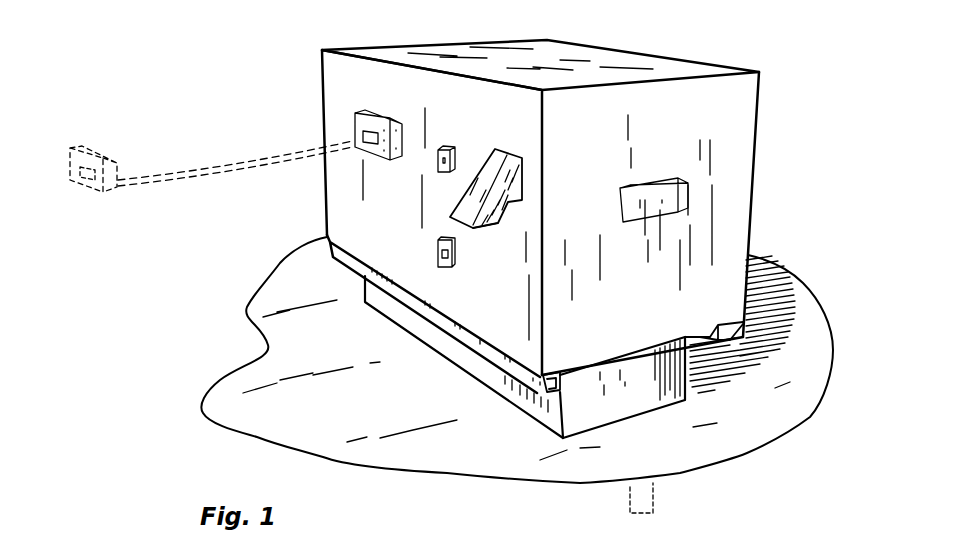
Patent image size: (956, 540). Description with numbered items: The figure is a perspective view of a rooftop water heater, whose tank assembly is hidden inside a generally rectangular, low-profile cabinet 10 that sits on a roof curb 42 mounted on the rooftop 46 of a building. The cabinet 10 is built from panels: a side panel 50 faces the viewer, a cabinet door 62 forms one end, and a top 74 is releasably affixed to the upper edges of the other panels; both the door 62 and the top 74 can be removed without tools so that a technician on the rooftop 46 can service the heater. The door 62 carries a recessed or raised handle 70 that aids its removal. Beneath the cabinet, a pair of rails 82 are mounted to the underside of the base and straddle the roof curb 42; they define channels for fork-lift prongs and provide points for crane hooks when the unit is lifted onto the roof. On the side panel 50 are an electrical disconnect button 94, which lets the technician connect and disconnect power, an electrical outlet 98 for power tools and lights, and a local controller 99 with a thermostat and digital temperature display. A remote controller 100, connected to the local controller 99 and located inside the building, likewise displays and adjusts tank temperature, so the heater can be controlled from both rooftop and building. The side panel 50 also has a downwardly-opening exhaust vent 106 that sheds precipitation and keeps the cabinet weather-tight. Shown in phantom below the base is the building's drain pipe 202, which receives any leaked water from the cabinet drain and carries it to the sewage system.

The cabinet 10 is at (258, 72).
The roof curb 42 is at (653, 390).
The rooftop 46 is at (470, 453).
The side panel 50 is at (413, 277).
The cabinet door 62 is at (735, 135).
The handle 70 is at (655, 208).
The top 74 is at (592, 52).
The rails 82 is at (455, 325).
The electrical disconnect button 94 is at (438, 172).
The electrical outlet 98 is at (455, 259).
The local controller 99 is at (353, 117).
The remote controller 100 is at (83, 190).
The exhaust vent 106 is at (482, 167).
The drain pipe 202 is at (657, 503).